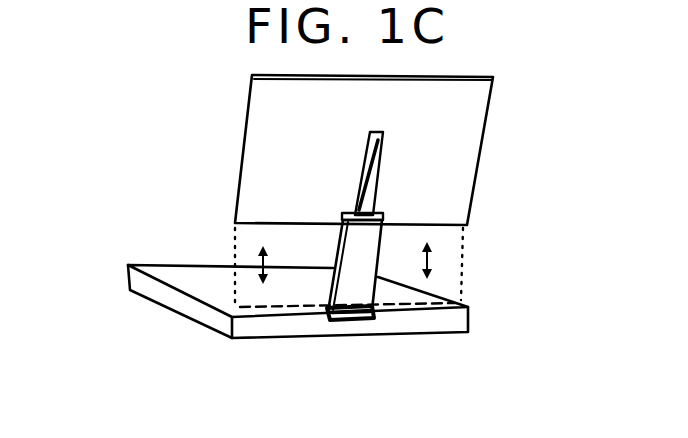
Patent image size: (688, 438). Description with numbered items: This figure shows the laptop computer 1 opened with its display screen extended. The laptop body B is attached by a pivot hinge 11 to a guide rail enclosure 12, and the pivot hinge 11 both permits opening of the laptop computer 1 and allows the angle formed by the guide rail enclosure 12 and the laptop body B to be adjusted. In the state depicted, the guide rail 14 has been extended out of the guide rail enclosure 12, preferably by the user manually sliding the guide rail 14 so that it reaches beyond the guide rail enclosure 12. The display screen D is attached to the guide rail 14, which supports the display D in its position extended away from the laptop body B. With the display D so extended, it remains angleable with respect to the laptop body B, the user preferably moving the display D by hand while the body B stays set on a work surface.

The laptop computer 1 is at (108, 131).
The display screen D is at (448, 58).
The guide rail 14 is at (398, 161).
The guide rail enclosure 12 is at (325, 276).
The pivot hinge 11 is at (355, 325).
The laptop body B is at (170, 325).